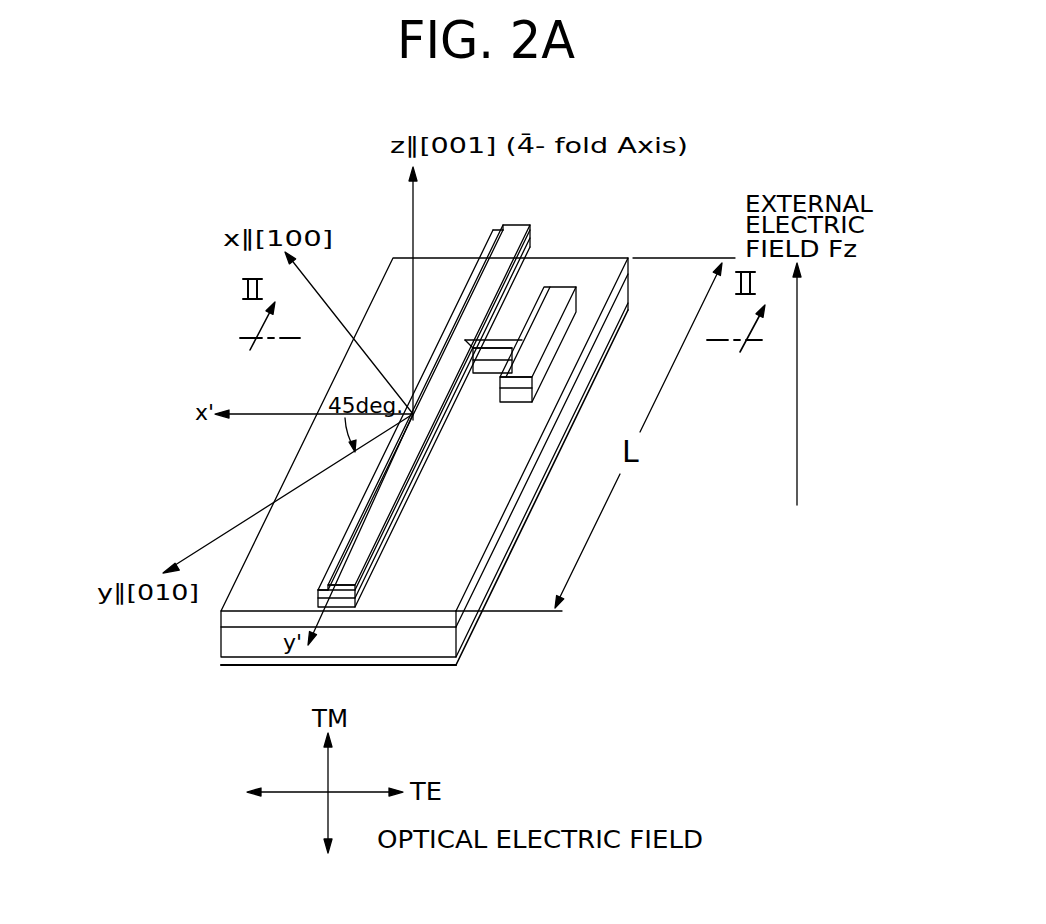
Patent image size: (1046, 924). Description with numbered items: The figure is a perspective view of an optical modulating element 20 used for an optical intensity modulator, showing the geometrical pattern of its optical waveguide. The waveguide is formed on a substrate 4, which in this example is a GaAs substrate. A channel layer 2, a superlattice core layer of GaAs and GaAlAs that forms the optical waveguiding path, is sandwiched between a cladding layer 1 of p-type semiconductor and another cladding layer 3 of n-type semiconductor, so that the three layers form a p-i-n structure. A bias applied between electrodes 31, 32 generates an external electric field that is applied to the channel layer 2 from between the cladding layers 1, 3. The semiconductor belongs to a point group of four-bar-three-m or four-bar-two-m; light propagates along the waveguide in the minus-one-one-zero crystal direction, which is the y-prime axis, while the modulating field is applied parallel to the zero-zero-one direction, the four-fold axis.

The cladding layer 1 is at (417, 473).
The channel layer 2 is at (388, 530).
The cladding layer 3 is at (523, 484).
The substrate 4 is at (497, 550).
The optical modulating element 20 is at (592, 249).
The electrode 31 is at (480, 290).
The electrode 32 is at (477, 625).